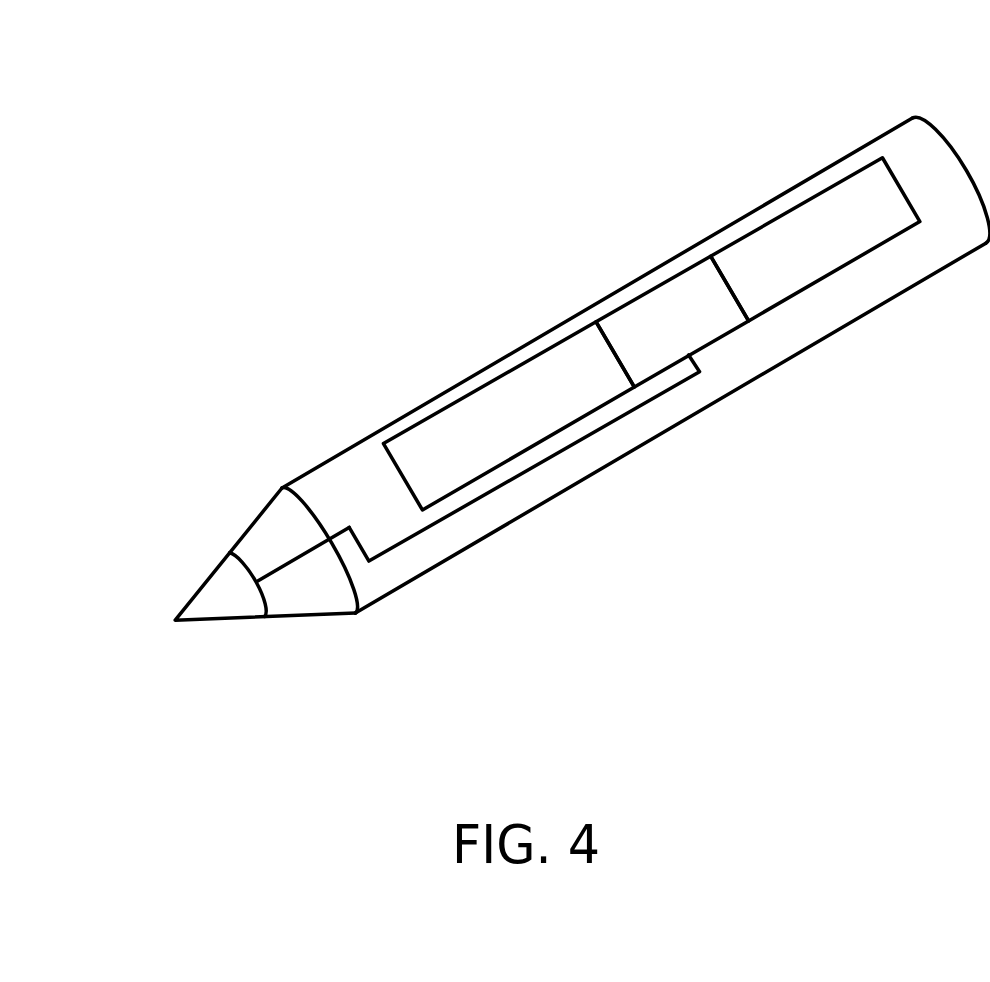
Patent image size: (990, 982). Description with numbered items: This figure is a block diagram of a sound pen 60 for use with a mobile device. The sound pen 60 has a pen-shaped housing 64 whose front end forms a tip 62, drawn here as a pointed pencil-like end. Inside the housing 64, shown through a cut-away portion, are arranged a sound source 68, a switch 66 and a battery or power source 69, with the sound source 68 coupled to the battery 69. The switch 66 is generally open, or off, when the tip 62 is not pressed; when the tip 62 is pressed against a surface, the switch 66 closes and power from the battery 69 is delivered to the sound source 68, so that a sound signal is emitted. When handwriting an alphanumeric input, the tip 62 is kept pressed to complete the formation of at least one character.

The sound pen 60 is at (709, 97).
The tip 62 is at (195, 595).
The pen-shaped housing 64 is at (513, 350).
The switch 66 is at (652, 288).
The sound source 68 is at (435, 410).
The battery or power source 69 is at (797, 203).